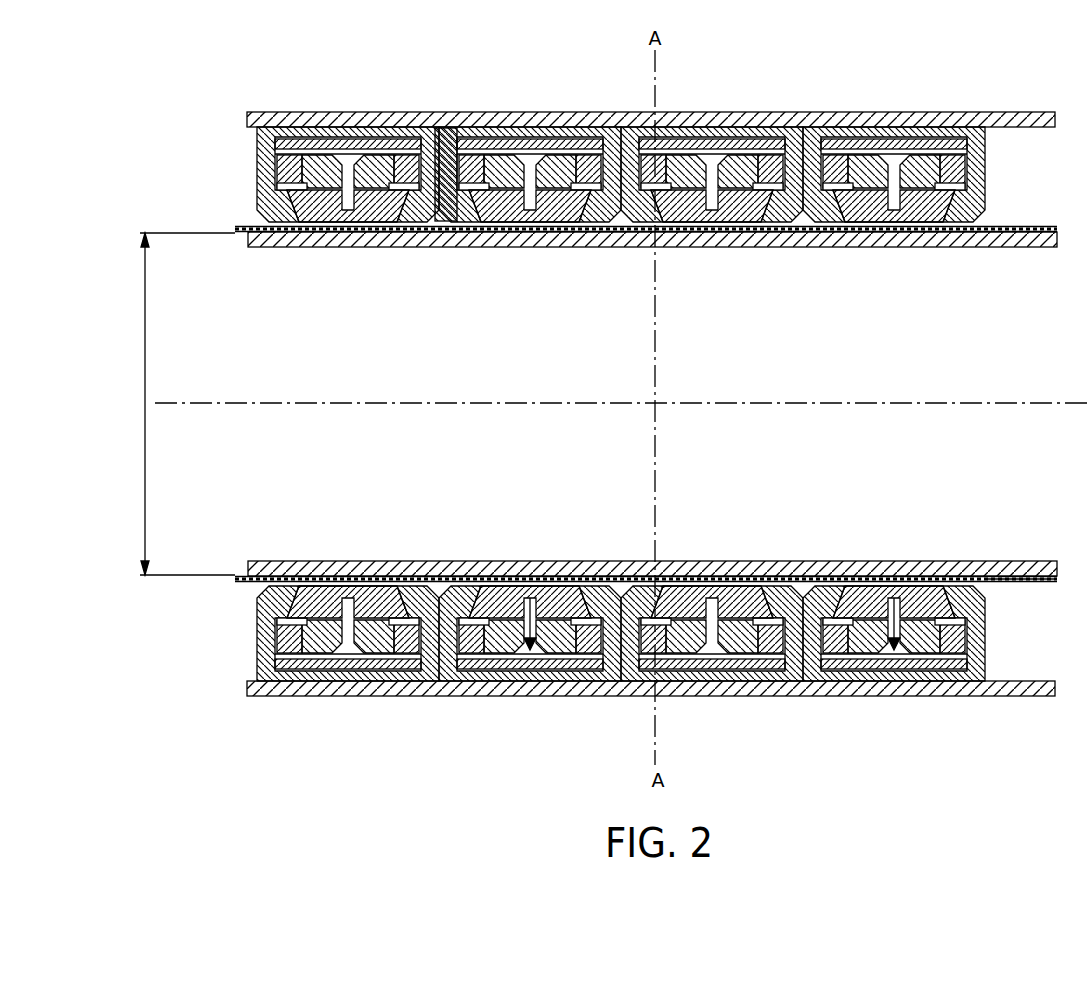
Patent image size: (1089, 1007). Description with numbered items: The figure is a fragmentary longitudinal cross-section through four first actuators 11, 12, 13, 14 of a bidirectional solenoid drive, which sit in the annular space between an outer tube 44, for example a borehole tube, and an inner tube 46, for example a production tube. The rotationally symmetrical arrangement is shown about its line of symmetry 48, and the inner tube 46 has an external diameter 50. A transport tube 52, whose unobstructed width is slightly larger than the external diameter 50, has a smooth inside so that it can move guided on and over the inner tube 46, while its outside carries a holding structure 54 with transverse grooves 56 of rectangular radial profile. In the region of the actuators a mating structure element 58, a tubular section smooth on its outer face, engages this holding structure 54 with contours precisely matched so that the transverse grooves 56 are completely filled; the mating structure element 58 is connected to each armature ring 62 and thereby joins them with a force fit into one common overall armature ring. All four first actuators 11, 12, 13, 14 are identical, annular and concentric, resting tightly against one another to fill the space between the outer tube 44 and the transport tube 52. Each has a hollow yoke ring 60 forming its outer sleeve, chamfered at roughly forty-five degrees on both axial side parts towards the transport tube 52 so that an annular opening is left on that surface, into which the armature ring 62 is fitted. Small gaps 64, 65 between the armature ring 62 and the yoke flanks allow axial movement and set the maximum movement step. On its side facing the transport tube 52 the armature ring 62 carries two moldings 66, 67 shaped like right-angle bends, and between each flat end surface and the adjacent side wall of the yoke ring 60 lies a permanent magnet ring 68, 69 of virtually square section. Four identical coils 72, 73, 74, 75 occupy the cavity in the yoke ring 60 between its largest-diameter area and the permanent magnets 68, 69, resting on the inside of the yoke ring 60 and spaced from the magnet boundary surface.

The first actuator 11 is at (352, 160).
The first actuator 12 is at (575, 580).
The first actuator 13 is at (716, 158).
The first actuator 14 is at (937, 580).
The outer tube 44 is at (1020, 112).
The inner tube 46 is at (838, 248).
The line of symmetry 48 is at (1047, 403).
The external diameter 50 is at (176, 404).
The transport tube 52 is at (1030, 226).
The holding structure 54 is at (1019, 590).
The transverse grooves 56 is at (1047, 583).
The mating structure element 58 is at (434, 213).
The yoke ring 60 is at (768, 580).
The armature ring 62 is at (360, 605).
The gap 64 is at (307, 232).
The gap 65 is at (395, 230).
The molding 66 is at (322, 640).
The molding 67 is at (374, 650).
The permanent magnet ring 68 is at (283, 590).
The permanent magnet ring 69 is at (417, 600).
The coil 72 is at (838, 143).
The coil 73 is at (877, 150).
The coil 74 is at (915, 147).
The coil 75 is at (953, 145).